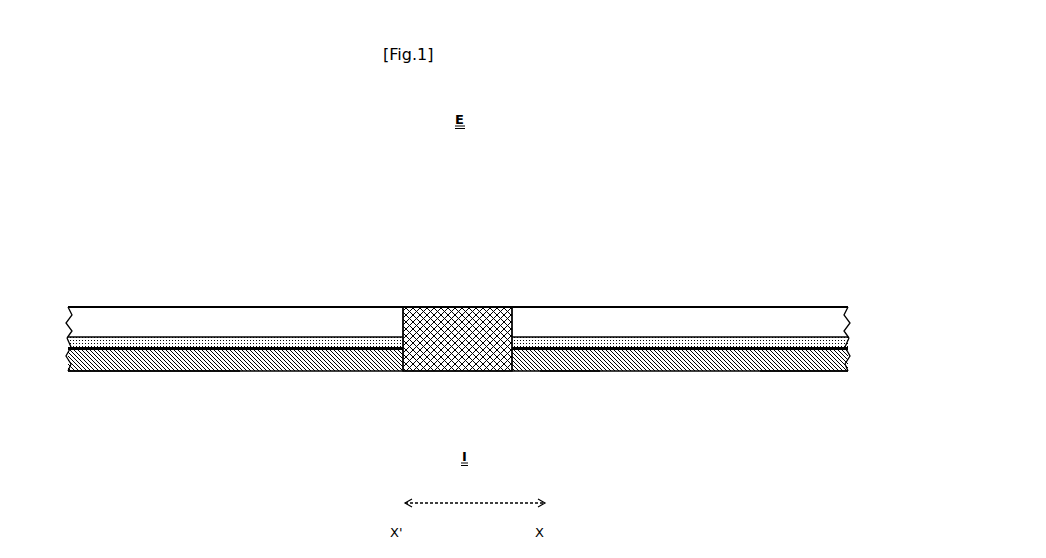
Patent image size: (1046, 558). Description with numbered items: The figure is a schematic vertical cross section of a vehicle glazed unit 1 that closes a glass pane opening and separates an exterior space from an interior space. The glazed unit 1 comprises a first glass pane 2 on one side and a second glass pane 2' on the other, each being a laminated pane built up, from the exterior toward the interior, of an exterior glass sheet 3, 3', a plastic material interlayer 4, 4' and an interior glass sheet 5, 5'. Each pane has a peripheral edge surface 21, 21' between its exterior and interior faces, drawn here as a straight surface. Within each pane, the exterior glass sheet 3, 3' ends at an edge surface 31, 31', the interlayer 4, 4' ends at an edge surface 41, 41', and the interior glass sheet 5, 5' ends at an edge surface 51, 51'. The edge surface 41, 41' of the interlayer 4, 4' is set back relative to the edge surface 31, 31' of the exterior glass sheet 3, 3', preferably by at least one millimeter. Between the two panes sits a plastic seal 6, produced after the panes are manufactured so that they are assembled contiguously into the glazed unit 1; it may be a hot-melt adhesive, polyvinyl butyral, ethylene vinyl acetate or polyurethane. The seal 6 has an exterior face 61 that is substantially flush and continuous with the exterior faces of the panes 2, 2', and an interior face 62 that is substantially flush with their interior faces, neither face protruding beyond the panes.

The glazed unit 1 is at (410, 215).
The first glass pane 2 is at (761, 261).
The second glass pane 2' is at (150, 261).
The exterior glass sheet 3 is at (774, 285).
The exterior glass sheet 3' is at (127, 269).
The plastic material interlayer 4 is at (804, 409).
The plastic material interlayer 4' is at (114, 404).
The interior glass sheet 5 is at (570, 432).
The interior glass sheet 5' is at (193, 423).
The seal 6 is at (460, 297).
The exterior face 61 is at (487, 307).
The interior face 62 is at (433, 372).
The peripheral edge surface 21 is at (550, 292).
The peripheral edge surface 21' is at (354, 285).
The edge surface 31 is at (536, 257).
The edge surface 31' is at (376, 275).
The edge surface 41 is at (562, 334).
The edge surface 41' is at (349, 331).
The edge surface 51 is at (541, 406).
The edge surface 51' is at (374, 396).